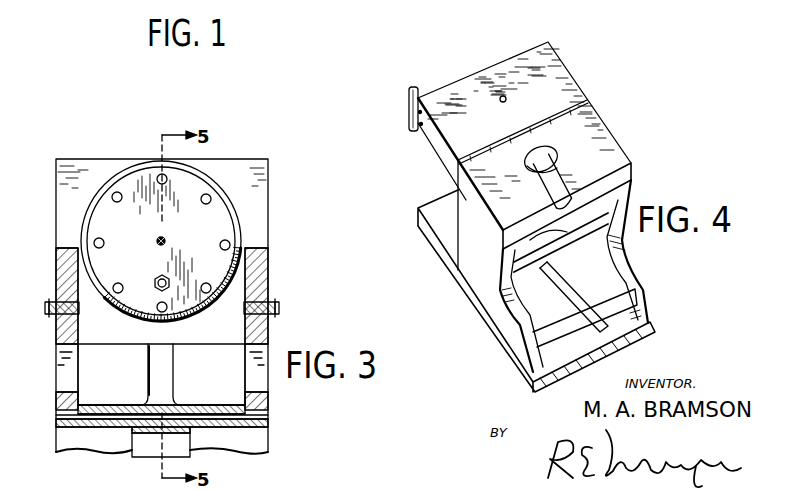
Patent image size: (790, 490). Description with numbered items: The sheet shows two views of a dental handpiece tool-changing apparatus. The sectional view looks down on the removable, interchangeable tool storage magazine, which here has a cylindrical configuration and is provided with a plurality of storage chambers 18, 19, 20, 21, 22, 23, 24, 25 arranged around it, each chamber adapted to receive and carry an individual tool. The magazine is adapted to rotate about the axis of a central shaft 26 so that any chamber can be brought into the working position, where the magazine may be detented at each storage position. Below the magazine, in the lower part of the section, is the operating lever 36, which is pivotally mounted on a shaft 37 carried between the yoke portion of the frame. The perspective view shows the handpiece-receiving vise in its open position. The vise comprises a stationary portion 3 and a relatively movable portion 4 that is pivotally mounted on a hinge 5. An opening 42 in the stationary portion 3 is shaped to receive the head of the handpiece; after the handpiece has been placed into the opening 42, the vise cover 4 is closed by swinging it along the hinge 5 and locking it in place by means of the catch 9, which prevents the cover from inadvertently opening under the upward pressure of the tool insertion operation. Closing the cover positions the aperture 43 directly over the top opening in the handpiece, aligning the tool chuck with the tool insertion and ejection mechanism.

In FIG. 4, the stationary portion 3 is at (620, 156).
In FIG. 4, the relatively movable portion 4 is at (575, 90).
In FIG. 4, the hinge 5 is at (588, 100).
In FIG. 4, the catch 9 is at (412, 100).
In FIG. 3, the storage chamber 18 is at (167, 177).
In FIG. 3, the storage chamber 19 is at (211, 198).
In FIG. 3, the storage chamber 20 is at (231, 245).
In FIG. 3, the storage chamber 21 is at (210, 293).
In FIG. 3, the storage chamber 22 is at (167, 312).
In FIG. 3, the storage chamber 23 is at (114, 292).
In FIG. 3, the storage chamber 24 is at (96, 239).
In FIG. 3, the storage chamber 25 is at (114, 192).
In FIG. 3, the shaft 26 is at (166, 239).
In FIG. 3, the operating lever 36 is at (201, 406).
In FIG. 3, the shaft 37 is at (62, 415).
In FIG. 4, the opening 42 is at (556, 148).
In FIG. 4, the aperture 43 is at (506, 98).